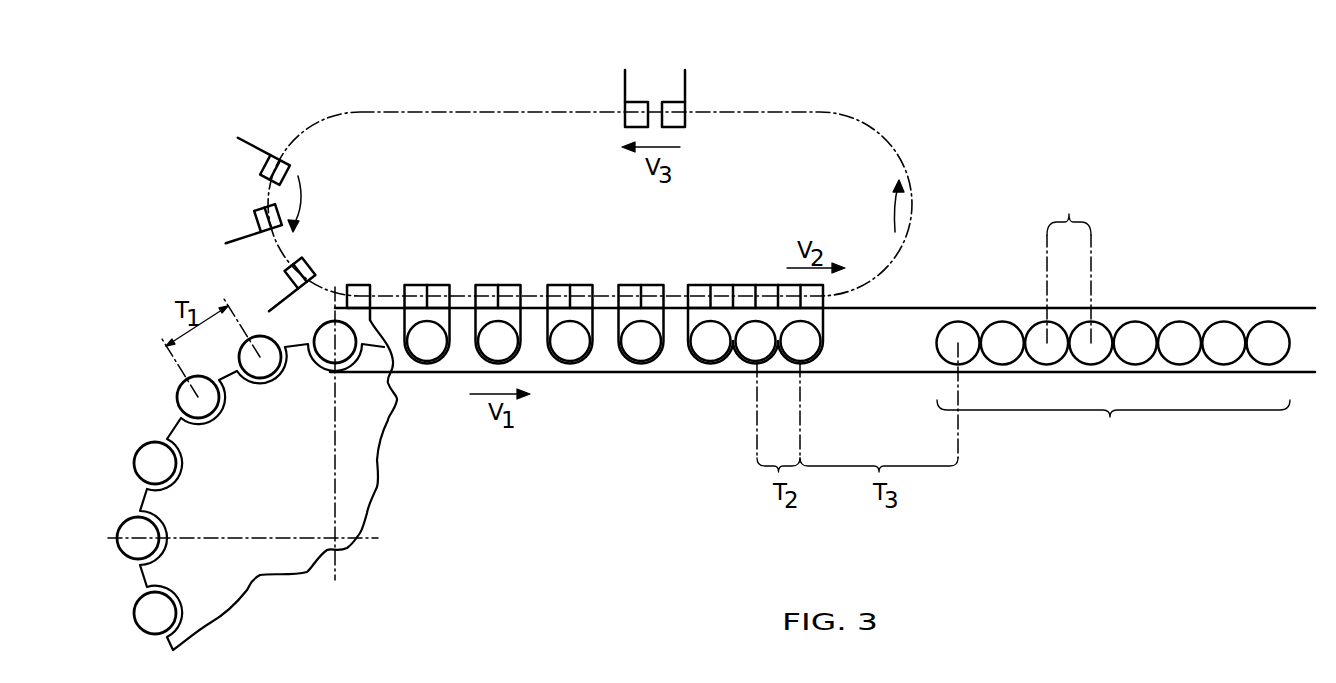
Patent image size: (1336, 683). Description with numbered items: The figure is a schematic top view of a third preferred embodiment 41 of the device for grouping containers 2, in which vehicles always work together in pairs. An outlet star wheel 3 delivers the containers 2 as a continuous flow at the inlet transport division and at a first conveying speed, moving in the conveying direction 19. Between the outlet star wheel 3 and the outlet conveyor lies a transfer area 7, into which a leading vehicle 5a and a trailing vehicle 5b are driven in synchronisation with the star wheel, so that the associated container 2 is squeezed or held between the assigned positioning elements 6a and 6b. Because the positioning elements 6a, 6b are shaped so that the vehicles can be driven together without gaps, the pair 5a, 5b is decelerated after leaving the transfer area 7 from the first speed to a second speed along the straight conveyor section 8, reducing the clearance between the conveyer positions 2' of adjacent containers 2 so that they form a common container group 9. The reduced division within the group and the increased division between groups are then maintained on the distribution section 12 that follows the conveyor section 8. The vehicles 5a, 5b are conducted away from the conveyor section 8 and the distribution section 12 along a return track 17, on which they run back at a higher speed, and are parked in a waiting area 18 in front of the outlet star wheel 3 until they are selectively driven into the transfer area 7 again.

The third preferred embodiment 41 is at (252, 107).
The waiting area 18 is at (214, 206).
The return track 17 is at (762, 112).
The leading vehicle 5a is at (357, 285).
The trailing vehicle 5b is at (307, 263).
The positioning element of the leading vehicle 6a is at (623, 80).
The positioning element of the trailing vehicle 6b is at (283, 290).
The transfer area 7 is at (314, 397).
The conveying direction 19 is at (190, 492).
The outlet star wheel 3 is at (357, 510).
The container 2 is at (534, 360).
The conveyer position 2' is at (755, 371).
The conveyor section 8 is at (680, 390).
The distribution section 12 is at (987, 260).
The container group 9 is at (1114, 387).